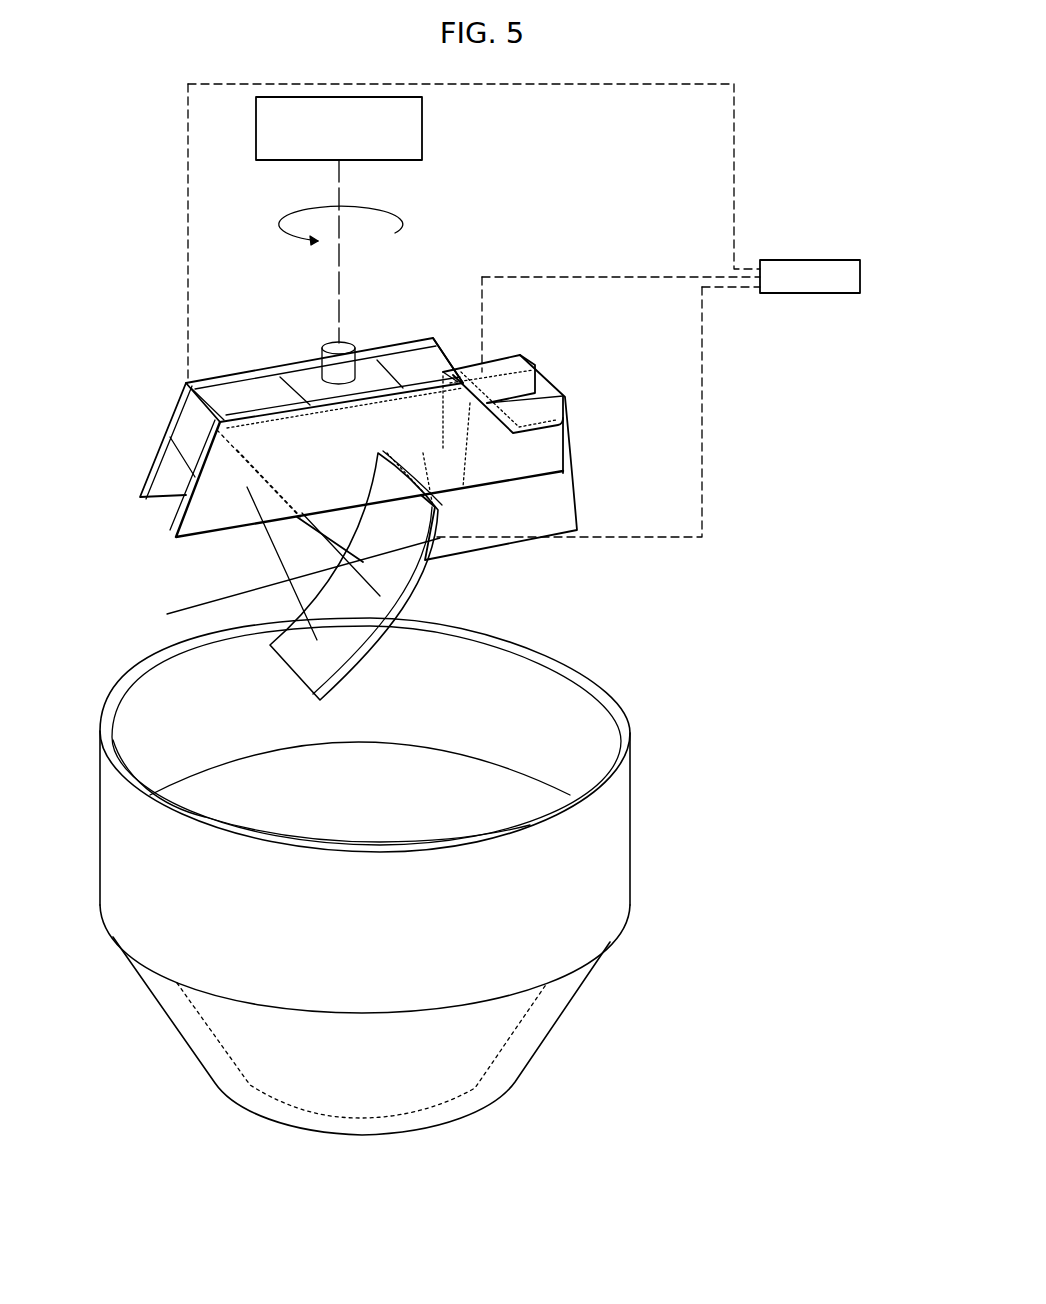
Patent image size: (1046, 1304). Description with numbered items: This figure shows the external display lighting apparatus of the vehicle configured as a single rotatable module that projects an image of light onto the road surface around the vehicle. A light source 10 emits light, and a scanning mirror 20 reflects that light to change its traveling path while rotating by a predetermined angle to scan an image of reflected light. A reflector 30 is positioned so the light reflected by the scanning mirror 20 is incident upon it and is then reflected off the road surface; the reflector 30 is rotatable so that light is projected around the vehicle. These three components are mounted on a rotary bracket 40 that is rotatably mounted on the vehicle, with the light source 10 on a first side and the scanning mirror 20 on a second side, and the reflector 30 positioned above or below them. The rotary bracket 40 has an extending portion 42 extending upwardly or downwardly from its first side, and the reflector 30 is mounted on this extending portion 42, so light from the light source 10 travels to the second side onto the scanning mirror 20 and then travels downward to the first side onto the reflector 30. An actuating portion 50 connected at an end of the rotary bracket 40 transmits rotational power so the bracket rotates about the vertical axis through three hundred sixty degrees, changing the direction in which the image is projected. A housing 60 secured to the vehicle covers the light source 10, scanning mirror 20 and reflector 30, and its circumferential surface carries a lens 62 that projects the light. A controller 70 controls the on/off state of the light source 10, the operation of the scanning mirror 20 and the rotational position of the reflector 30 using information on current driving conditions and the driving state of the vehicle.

The light source 10 is at (494, 369).
The scanning mirror 20 is at (187, 422).
The reflector 30 is at (420, 583).
The rotary bracket 40 is at (175, 530).
The extending portion 42 is at (558, 510).
The actuating portion 50 is at (423, 125).
The housing 60 is at (610, 857).
The lens 62 is at (537, 1040).
The controller 70 is at (807, 272).